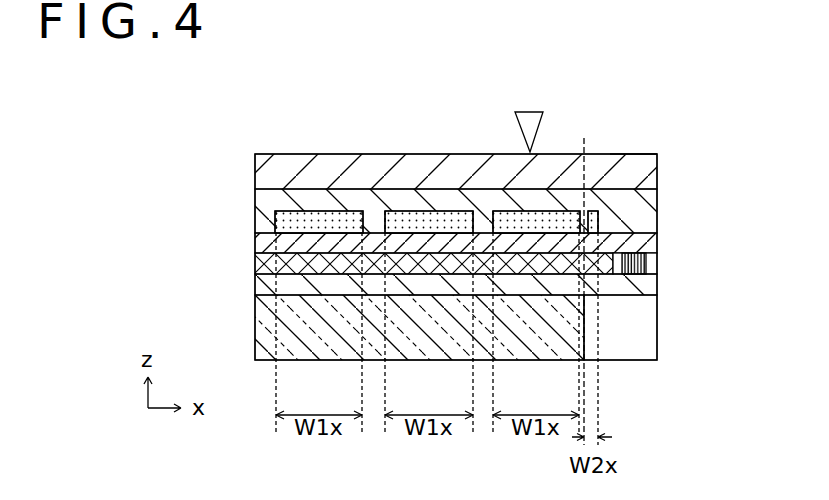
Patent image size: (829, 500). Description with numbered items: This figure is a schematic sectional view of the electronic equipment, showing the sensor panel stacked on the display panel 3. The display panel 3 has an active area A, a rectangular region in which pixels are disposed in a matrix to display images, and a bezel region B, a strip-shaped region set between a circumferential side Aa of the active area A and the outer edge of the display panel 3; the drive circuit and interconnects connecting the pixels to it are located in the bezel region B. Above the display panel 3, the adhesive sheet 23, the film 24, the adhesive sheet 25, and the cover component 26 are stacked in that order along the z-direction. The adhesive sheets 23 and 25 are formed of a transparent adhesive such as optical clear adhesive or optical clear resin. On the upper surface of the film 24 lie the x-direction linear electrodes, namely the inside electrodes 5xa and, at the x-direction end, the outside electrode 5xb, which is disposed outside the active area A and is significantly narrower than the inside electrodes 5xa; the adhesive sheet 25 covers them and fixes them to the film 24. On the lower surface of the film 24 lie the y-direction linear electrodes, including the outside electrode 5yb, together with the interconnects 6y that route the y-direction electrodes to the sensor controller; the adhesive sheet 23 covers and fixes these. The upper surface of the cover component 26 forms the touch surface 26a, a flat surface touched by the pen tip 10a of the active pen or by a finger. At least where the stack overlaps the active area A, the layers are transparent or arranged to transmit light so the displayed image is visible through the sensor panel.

The display panel 3 is at (706, 327).
The adhesive sheet 23 is at (657, 290).
The film 24 is at (657, 241).
The adhesive sheet 25 is at (657, 198).
The cover component 26 is at (657, 170).
The touch surface 26a is at (640, 154).
The inside electrodes 5xa is at (290, 218).
The outside electrode 5xb is at (598, 216).
The outside electrode 5yb is at (268, 256).
The interconnects 6y is at (647, 265).
The pen tip 10a is at (529, 112).
The circumferential side of the active area Aa is at (584, 278).
The active area A is at (578, 350).
The bezel region B is at (647, 342).